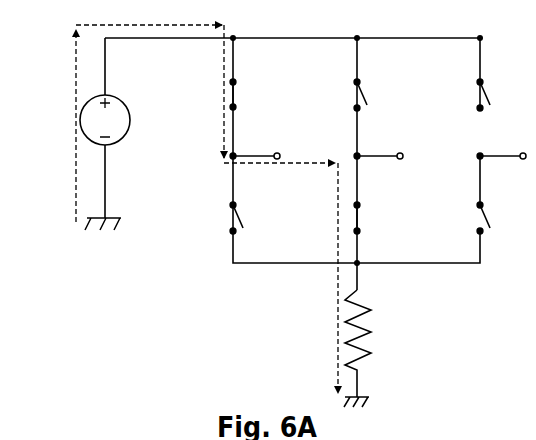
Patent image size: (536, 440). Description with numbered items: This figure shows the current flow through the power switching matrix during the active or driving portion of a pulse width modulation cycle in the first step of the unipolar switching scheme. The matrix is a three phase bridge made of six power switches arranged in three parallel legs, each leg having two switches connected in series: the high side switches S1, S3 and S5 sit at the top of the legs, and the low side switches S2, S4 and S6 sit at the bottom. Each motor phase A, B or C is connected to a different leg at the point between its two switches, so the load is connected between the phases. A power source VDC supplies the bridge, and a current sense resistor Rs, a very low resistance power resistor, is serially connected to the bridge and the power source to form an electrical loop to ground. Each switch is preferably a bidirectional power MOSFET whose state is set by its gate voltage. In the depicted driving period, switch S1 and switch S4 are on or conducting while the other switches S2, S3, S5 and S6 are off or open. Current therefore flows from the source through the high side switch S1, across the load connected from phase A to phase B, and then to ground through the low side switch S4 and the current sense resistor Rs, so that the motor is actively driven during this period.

The power source VDC is at (81, 134).
The high side power switch S1 is at (250, 94).
The low side power switch S2 is at (250, 218).
The high side power switch S3 is at (374, 94).
The low side power switch S4 is at (374, 218).
The high side power switch S5 is at (497, 94).
The low side power switch S6 is at (497, 218).
The motor phase A is at (257, 144).
The motor phase B is at (380, 144).
The motor phase C is at (503, 144).
The current sense resistor Rs is at (371, 348).